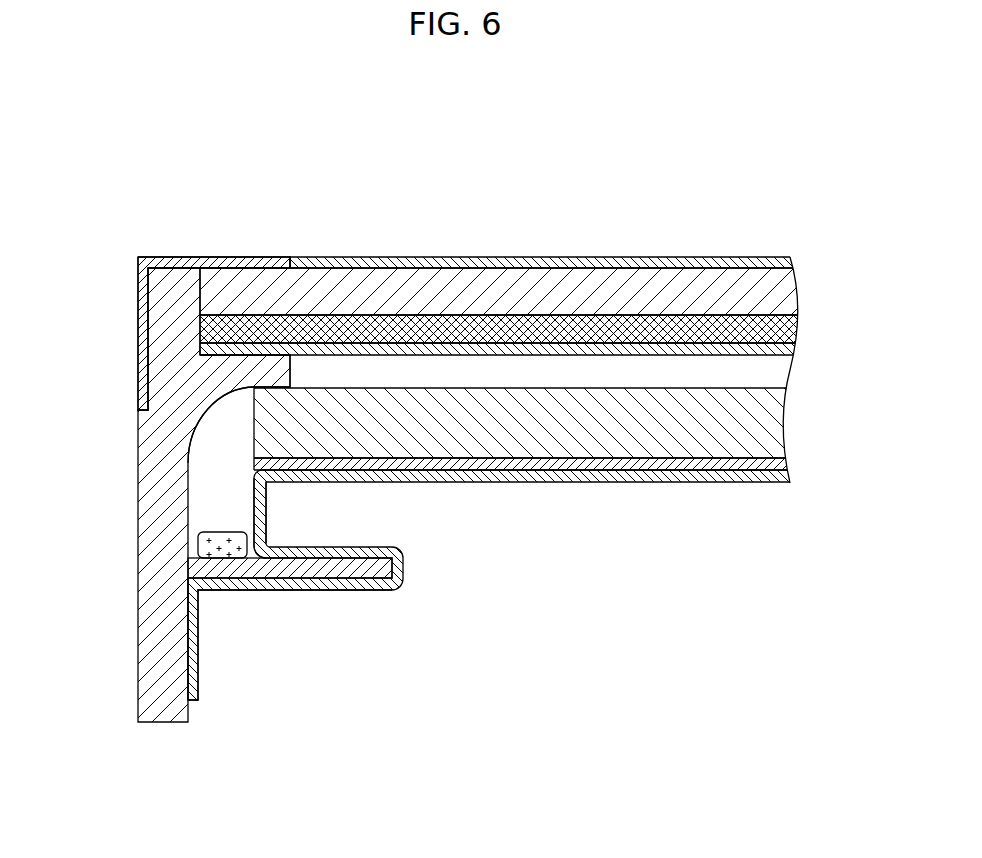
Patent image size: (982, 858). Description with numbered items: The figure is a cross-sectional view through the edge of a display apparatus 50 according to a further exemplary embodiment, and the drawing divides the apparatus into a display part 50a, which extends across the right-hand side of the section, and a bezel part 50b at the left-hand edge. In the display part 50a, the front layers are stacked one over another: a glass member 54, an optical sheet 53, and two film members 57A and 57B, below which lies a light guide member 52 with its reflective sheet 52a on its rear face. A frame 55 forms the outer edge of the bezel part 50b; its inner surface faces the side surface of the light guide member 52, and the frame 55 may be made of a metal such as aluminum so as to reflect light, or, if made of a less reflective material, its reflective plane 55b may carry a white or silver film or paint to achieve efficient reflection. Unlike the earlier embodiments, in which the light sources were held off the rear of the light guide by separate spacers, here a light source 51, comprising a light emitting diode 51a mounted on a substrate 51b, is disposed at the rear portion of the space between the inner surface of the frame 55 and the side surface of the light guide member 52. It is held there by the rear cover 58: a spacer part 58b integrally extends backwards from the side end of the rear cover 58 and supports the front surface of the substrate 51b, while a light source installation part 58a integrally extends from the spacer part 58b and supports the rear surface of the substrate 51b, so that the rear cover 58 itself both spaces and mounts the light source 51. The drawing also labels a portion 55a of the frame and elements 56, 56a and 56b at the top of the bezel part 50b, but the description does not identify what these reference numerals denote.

The display apparatus 50 is at (442, 119).
The display part 50a is at (298, 217).
The bezel part 50b is at (138, 217).
The light source 51 is at (73, 543).
The light emitting diode 51a is at (198, 544).
The substrate 51b is at (198, 572).
The light guide member 52 is at (765, 428).
The reflective sheet 52a is at (775, 468).
The optical sheet 53 is at (770, 330).
The glass member 54 is at (775, 290).
The frame 55 is at (128, 468).
The frame step portion 55a is at (292, 372).
The reflective plane 55b is at (206, 417).
The cover member 56 is at (73, 227).
The cover top portion 56a is at (178, 257).
The cover side portion 56b is at (141, 303).
The film member 57A is at (787, 348).
The film member 57B is at (530, 258).
The rear cover 58 is at (584, 486).
The light source installation part 58a is at (345, 589).
The spacer part 58b is at (267, 516).